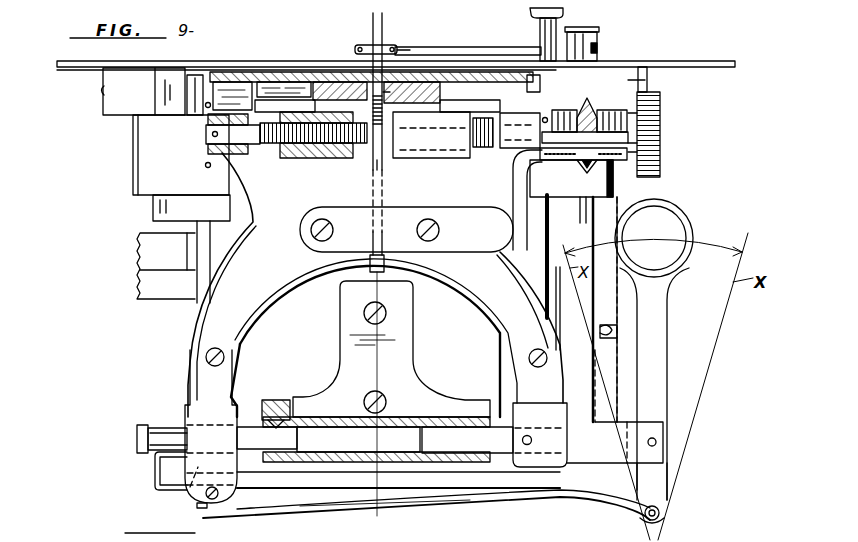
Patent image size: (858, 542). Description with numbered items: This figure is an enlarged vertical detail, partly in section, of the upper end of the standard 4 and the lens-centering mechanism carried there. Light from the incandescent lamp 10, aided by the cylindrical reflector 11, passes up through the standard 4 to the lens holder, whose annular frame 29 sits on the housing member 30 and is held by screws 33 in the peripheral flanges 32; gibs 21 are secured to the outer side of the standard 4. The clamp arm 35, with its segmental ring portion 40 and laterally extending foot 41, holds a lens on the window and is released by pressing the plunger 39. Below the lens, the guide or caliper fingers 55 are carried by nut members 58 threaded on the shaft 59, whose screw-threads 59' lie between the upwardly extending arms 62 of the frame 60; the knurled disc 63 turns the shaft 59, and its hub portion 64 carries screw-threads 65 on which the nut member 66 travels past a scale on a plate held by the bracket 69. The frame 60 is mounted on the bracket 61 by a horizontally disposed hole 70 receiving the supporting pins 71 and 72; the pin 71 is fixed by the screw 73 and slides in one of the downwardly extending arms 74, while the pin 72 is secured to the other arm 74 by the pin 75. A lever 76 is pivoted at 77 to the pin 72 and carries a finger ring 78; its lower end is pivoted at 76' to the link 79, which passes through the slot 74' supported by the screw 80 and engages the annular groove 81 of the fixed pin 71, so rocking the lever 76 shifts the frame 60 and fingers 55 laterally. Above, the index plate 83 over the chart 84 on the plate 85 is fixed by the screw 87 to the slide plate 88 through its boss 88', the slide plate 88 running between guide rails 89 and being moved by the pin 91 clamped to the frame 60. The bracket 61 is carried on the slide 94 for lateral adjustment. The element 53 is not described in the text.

The standard 4 is at (492, 506).
The incandescent lamp 10 is at (379, 526).
The cylindrical reflector 11 is at (587, 96).
The gibs 21 is at (613, 303).
The annular frame 29 is at (648, 68).
The housing member 30 is at (133, 175).
The peripheral flanges 32 is at (124, 106).
The screws 33 is at (103, 93).
The clamp arm 35 is at (471, 53).
The plunger 39 is at (563, 14).
The segmental ring portion 40 is at (364, 45).
The laterally extending foot 41 is at (609, 48).
The washer 53 is at (300, 112).
The guide or caliper fingers 55 is at (445, 112).
The nut members 58 is at (353, 158).
The shaft 59 is at (209, 138).
The screw-threads 59' is at (378, 150).
The frame 60 is at (282, 232).
The bracket 61 is at (413, 388).
The upwardly extending arms 62 is at (219, 180).
The knurled disc 63 is at (660, 133).
The hub portion 64 is at (612, 118).
The screw-threads 65 is at (561, 112).
The nut member 66 is at (592, 110).
The bracket 69 is at (516, 210).
The horizontally disposed hole 70 is at (376, 439).
The supporting pin 71 is at (267, 438).
The supporting pin 72 is at (398, 457).
The screw 73 is at (278, 400).
The downwardly extending arms 74 is at (369, 429).
The slot 74' is at (171, 484).
The pin 75 is at (532, 440).
The lever 76 is at (632, 348).
The pivot 76' is at (673, 515).
The pivot 77 is at (658, 442).
The finger ring 78 is at (692, 232).
The link 79 is at (588, 497).
The screw 80 is at (219, 495).
The annular groove 81 is at (150, 426).
The index plate 83 is at (336, 70).
The chart 84 is at (303, 72).
The plate 85 is at (268, 80).
The screw 87 is at (392, 47).
The slide plate 88 is at (431, 135).
The boss 88' is at (424, 56).
The guide rails 89 is at (263, 92).
The pin 91 is at (383, 168).
The slide 94 is at (375, 285).